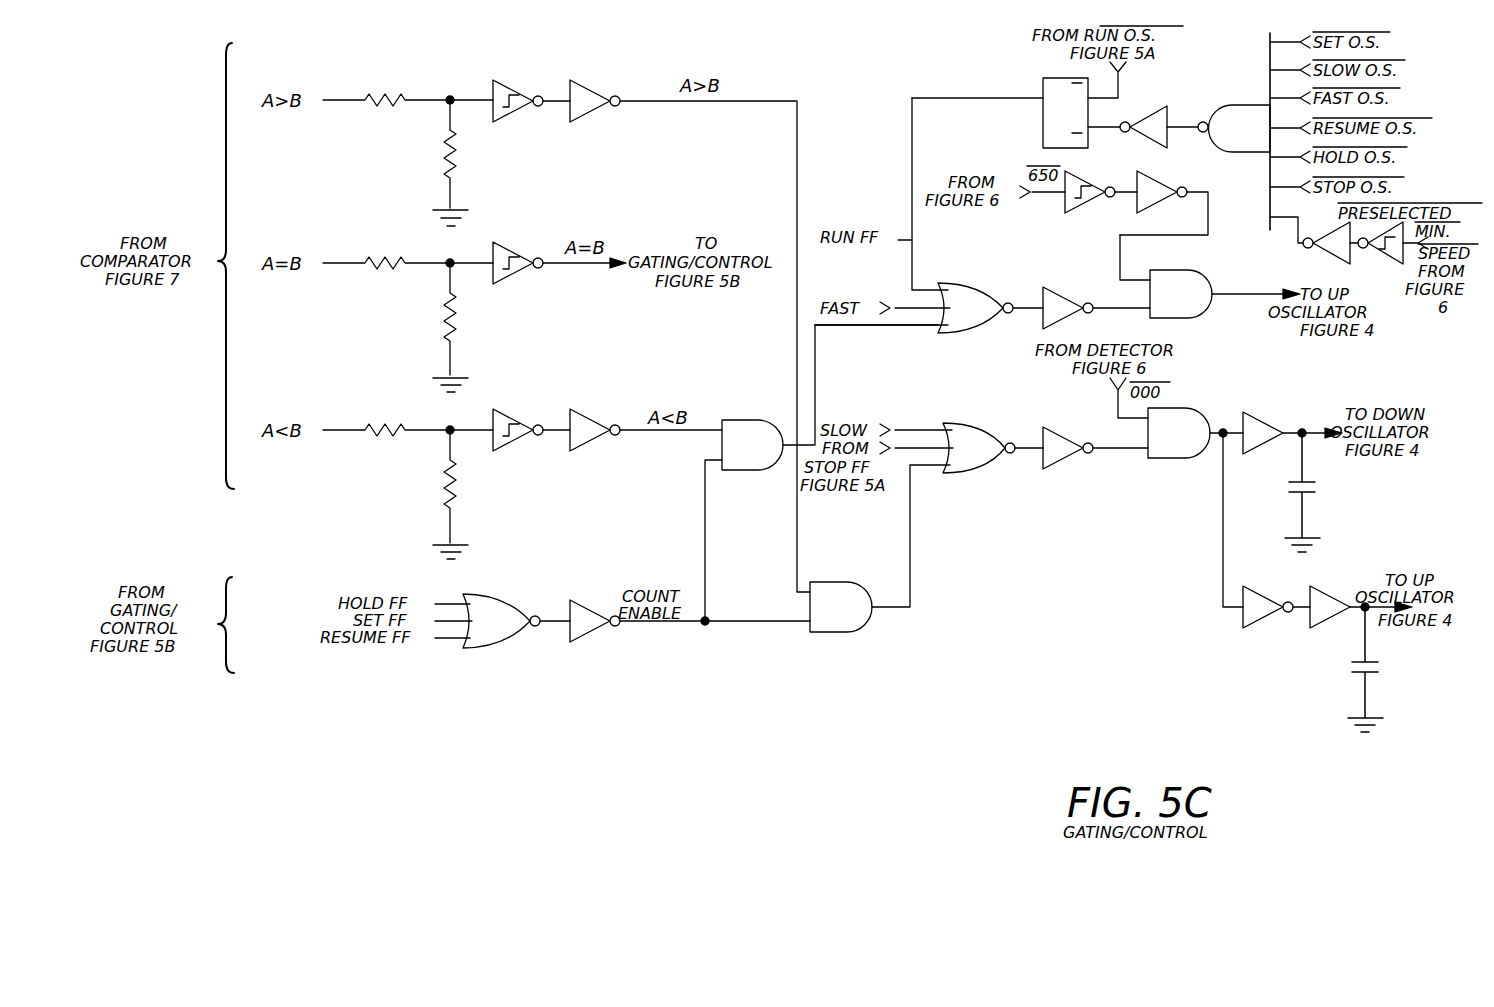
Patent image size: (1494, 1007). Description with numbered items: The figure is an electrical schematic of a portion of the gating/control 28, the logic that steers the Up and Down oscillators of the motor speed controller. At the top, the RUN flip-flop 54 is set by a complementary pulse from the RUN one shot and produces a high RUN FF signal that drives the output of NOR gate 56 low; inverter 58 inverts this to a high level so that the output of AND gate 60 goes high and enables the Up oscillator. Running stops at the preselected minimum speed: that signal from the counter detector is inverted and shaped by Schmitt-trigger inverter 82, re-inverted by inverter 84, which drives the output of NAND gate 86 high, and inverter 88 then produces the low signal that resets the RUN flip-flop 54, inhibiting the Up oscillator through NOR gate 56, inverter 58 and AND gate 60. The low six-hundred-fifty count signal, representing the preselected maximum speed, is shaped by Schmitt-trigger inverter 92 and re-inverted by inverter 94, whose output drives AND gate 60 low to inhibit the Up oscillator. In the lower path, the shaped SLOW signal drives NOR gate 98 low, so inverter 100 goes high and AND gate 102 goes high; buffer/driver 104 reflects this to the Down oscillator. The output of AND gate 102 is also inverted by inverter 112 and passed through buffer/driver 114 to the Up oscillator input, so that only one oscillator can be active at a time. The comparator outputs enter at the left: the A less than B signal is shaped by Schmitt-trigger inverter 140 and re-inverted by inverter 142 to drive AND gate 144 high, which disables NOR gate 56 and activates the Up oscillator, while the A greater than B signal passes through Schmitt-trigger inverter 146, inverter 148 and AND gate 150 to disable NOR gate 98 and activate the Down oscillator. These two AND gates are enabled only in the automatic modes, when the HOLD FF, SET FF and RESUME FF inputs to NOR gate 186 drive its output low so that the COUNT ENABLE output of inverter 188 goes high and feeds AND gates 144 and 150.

The gating/control 28 is at (952, 668).
The RUN flip-flop 54 is at (1043, 82).
The NOR gate 56 is at (1000, 284).
The inverter 58 is at (1058, 300).
The AND gate 60 is at (1182, 285).
The Schmitt-trigger inverter 82 is at (1392, 258).
The inverter 84 is at (1316, 250).
The NAND gate 86 is at (1232, 108).
The inverter 88 is at (1150, 110).
The Schmitt-trigger inverter 92 is at (1092, 185).
The inverter 94 is at (1157, 182).
The NOR gate 98 is at (980, 425).
The inverter 100 is at (1065, 414).
The AND gate 102 is at (1184, 410).
The buffer/driver 104 is at (1262, 418).
The inverter 112 is at (1256, 622).
The buffer/driver 114 is at (1328, 570).
The Schmitt-trigger inverter 140 is at (497, 416).
The inverter 142 is at (577, 412).
The AND gate 144 is at (742, 420).
The Schmitt-trigger inverter 146 is at (504, 74).
The inverter 148 is at (583, 82).
The AND gate 150 is at (828, 583).
The NOR gate 186 is at (510, 588).
The inverter 188 is at (580, 590).